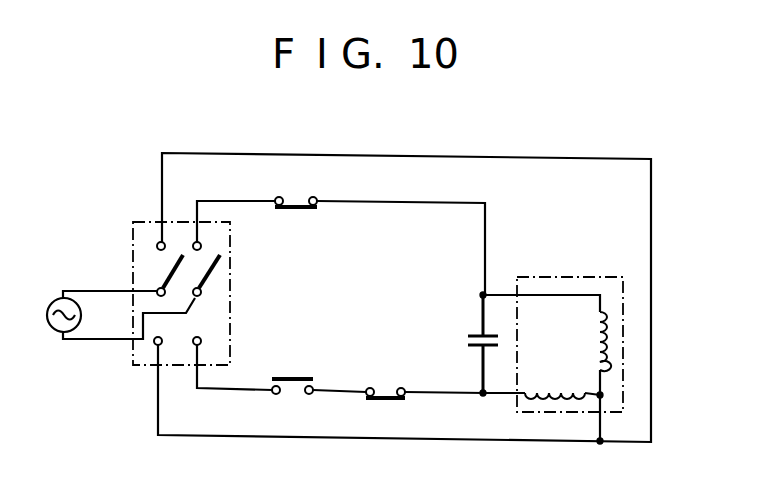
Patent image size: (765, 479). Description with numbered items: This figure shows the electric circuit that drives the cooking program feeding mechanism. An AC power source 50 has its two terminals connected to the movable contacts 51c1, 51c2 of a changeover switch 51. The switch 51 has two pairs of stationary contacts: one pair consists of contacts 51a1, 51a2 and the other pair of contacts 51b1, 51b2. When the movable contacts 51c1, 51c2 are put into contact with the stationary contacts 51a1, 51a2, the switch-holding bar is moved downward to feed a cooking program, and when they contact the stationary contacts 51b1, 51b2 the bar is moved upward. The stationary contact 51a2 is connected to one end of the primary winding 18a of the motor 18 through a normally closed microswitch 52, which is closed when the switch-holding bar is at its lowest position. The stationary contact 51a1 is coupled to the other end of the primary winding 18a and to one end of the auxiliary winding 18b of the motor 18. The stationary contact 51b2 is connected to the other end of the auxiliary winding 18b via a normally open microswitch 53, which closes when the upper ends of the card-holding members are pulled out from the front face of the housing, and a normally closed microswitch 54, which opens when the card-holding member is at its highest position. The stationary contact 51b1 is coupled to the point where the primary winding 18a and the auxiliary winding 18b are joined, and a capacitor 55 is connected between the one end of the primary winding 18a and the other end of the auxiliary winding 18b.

The motor 18 is at (588, 277).
The primary winding 18a is at (596, 328).
The auxiliary winding 18b is at (552, 386).
The AC power source 50 is at (81, 310).
The changeover switch 51 is at (148, 221).
The stationary contact 51a1 is at (157, 244).
The stationary contact 51a2 is at (201, 246).
The stationary contact 51b1 is at (157, 345).
The stationary contact 51b2 is at (201, 341).
The movable contact 51c1 is at (157, 291).
The movable contact 51c2 is at (201, 291).
The microswitch 52 is at (298, 196).
The microswitch 53 is at (290, 398).
The microswitch 54 is at (387, 401).
The capacitor 55 is at (466, 342).